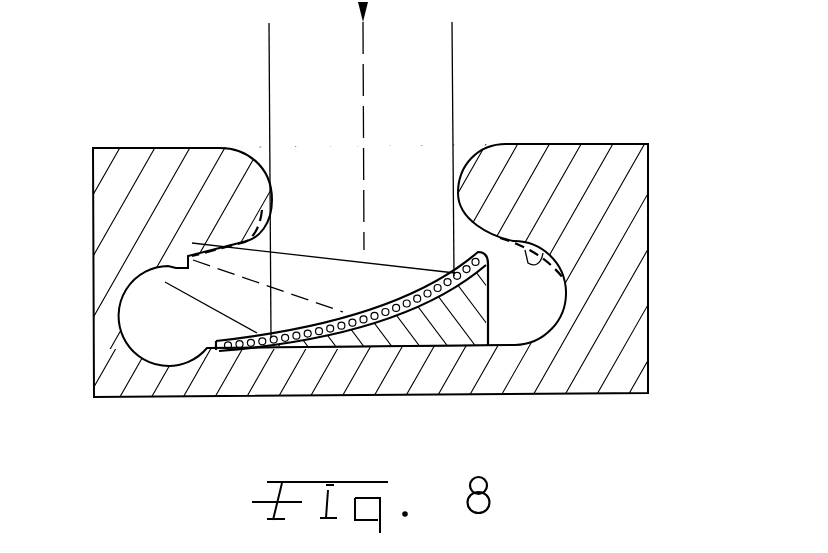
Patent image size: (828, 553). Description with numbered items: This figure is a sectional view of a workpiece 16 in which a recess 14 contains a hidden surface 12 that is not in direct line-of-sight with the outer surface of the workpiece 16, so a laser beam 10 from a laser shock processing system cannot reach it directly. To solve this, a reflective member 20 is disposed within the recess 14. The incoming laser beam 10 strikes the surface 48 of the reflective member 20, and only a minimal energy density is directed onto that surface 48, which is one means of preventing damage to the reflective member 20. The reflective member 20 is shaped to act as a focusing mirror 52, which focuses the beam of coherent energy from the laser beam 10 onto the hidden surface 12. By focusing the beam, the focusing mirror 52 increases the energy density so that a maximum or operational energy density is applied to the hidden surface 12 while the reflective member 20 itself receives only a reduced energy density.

The laser beam 10 is at (268, 77).
The hidden surface 12 is at (168, 264).
The recess 14 is at (462, 147).
The workpiece 16 is at (628, 370).
The reflective member 20 is at (437, 345).
The surface of reflective member 48 is at (308, 330).
The focusing mirror 52 is at (338, 316).